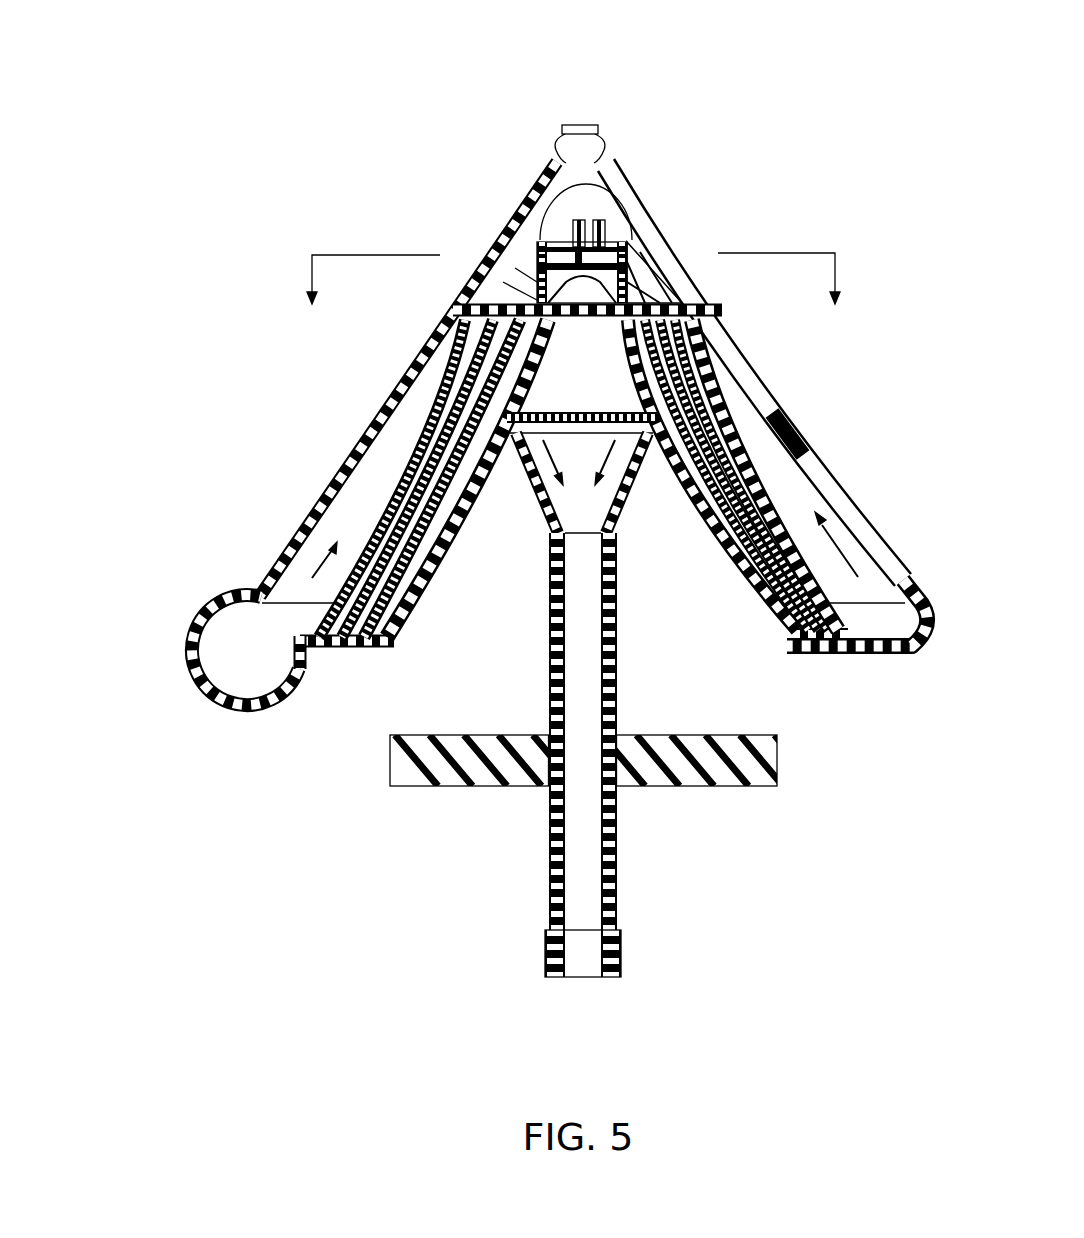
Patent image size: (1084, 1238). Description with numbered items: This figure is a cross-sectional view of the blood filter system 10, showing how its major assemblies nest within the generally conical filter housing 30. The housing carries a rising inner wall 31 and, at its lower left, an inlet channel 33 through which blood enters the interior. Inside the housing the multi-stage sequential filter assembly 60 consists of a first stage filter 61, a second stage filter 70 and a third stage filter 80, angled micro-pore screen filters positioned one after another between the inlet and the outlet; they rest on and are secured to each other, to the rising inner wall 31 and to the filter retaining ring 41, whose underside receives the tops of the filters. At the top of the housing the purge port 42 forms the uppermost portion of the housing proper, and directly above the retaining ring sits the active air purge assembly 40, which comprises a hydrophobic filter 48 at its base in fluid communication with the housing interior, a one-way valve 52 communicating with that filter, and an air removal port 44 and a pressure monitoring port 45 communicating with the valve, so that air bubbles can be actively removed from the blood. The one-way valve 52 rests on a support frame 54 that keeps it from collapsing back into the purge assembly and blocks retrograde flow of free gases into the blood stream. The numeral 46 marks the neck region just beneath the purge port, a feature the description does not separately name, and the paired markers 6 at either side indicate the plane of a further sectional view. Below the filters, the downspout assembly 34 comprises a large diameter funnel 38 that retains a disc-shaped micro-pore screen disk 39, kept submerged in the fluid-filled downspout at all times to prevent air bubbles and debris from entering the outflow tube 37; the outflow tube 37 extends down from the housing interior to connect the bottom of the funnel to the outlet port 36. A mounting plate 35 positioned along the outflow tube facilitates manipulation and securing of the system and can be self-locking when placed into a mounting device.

The blood filter system 10 is at (501, 534).
The filter housing 30 is at (860, 520).
The rising inner wall 31 is at (413, 600).
The inlet channel 33 is at (186, 667).
The downspout assembly 34 is at (630, 641).
The mounting plate 35 is at (777, 768).
The outlet port 36 is at (585, 978).
The outflow tube 37 is at (570, 863).
The large diameter funnel 38 is at (637, 488).
The micro-pore screen disk 39 is at (600, 413).
The active air purge assembly 40 is at (492, 262).
The filter retaining ring 41 is at (482, 277).
The purge port 42 is at (585, 125).
The air removal port 44 is at (543, 198).
The pressure monitoring port 45 is at (603, 220).
The inlet neck 46 is at (558, 148).
The hydrophobic filter 48 is at (583, 283).
The one-way valve 52 is at (628, 243).
The support frame 54 is at (637, 292).
The multi-stage sequential filter assembly 60 is at (786, 490).
The first stage filter 61 is at (400, 473).
The second stage filter 70 is at (435, 436).
The third stage filter 80 is at (478, 353).
The section line 6- 6 is at (574, 299).